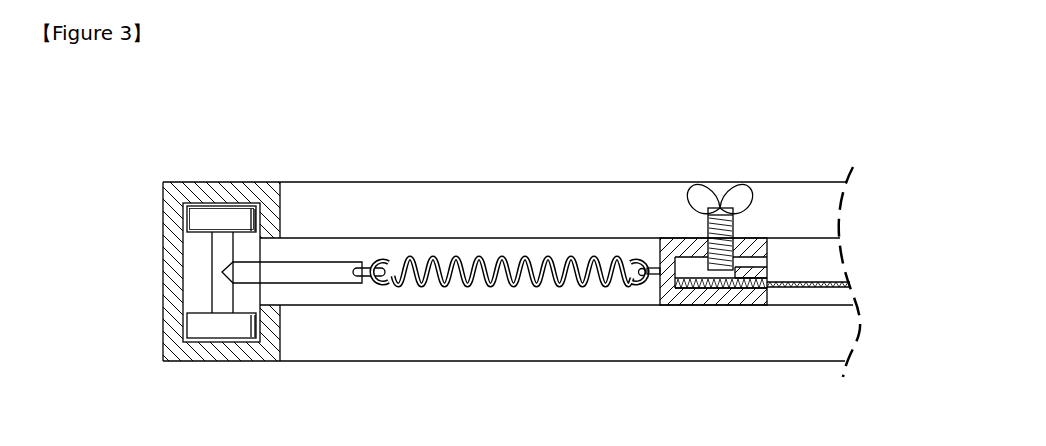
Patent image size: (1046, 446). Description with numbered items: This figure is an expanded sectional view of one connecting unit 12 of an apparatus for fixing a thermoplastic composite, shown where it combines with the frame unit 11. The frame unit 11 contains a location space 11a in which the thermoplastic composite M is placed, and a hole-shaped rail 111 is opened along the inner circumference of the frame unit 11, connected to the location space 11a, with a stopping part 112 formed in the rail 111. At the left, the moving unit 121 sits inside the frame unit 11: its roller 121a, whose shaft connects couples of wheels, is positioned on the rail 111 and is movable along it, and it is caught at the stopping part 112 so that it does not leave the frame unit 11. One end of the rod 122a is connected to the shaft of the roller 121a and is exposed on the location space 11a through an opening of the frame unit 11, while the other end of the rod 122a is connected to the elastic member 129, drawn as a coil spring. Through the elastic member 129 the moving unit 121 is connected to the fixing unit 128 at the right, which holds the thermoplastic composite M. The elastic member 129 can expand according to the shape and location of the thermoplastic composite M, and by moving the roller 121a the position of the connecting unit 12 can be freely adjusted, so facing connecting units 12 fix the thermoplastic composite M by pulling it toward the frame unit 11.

The frame unit 11 is at (162, 180).
The location space 11a is at (477, 199).
The rail 111 is at (197, 282).
The stopping part 112 is at (269, 322).
The connecting unit 12 is at (478, 308).
The moving unit 121 is at (370, 133).
The roller 121a is at (224, 198).
The rod 122a is at (315, 268).
The fixing unit 128 is at (774, 213).
The elastic member 129 is at (503, 258).
The thermoplastic composite M is at (815, 281).